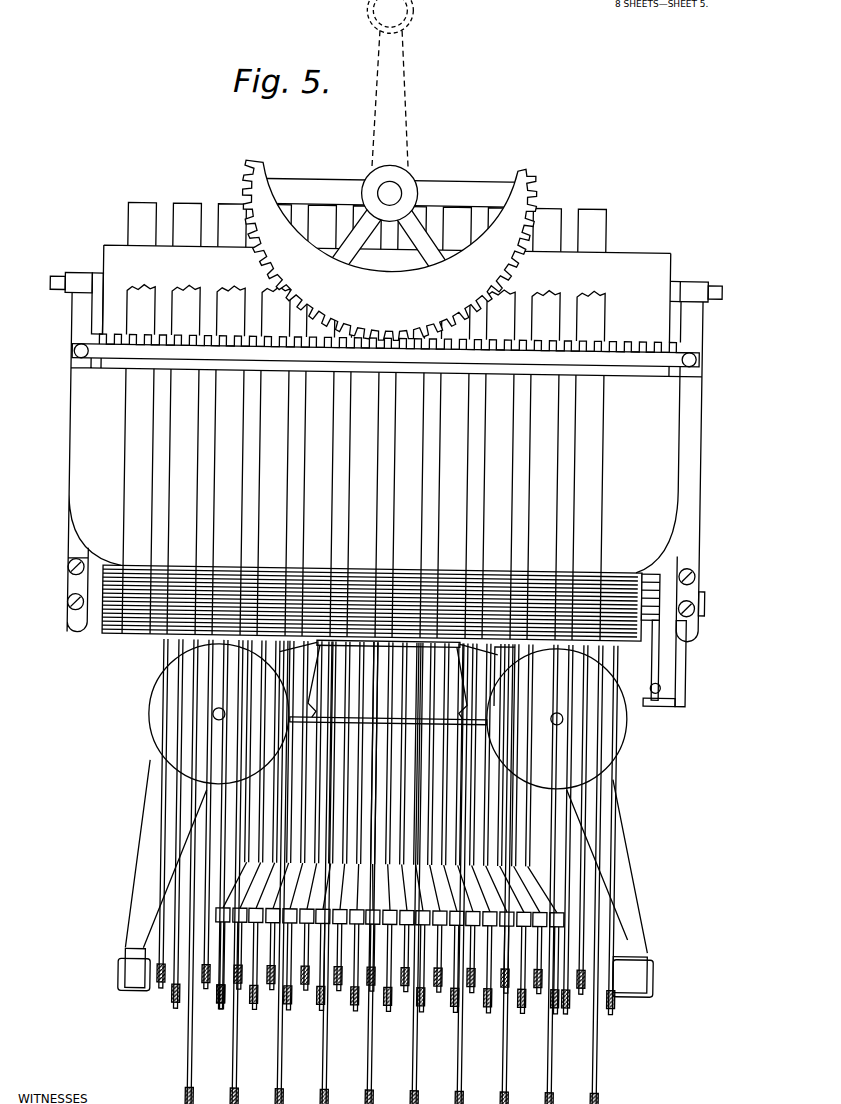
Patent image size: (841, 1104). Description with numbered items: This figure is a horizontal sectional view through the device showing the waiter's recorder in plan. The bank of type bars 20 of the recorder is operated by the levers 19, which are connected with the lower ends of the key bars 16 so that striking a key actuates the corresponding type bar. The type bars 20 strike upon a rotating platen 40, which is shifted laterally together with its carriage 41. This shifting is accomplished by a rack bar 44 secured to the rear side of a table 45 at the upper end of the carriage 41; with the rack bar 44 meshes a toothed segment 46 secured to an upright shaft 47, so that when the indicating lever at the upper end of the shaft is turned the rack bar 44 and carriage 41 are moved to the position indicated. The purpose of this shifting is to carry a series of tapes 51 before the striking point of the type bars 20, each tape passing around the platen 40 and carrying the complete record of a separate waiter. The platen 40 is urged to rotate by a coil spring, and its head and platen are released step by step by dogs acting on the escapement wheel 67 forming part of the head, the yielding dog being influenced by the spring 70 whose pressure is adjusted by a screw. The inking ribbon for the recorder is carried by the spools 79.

The key bars 16 is at (283, 1010).
The levers 19 is at (557, 1046).
The type bars 20 is at (540, 835).
The rotating platen 40 is at (110, 633).
The carriage 41 is at (691, 661).
The rack bar 44 is at (633, 345).
The table 45 is at (688, 466).
The toothed segment 46 is at (537, 167).
The upright shaft 47 is at (383, 184).
The tapes 51 is at (215, 204).
The escapement wheel 67 is at (663, 613).
The spring 70 is at (661, 633).
The spools 79 is at (161, 722).